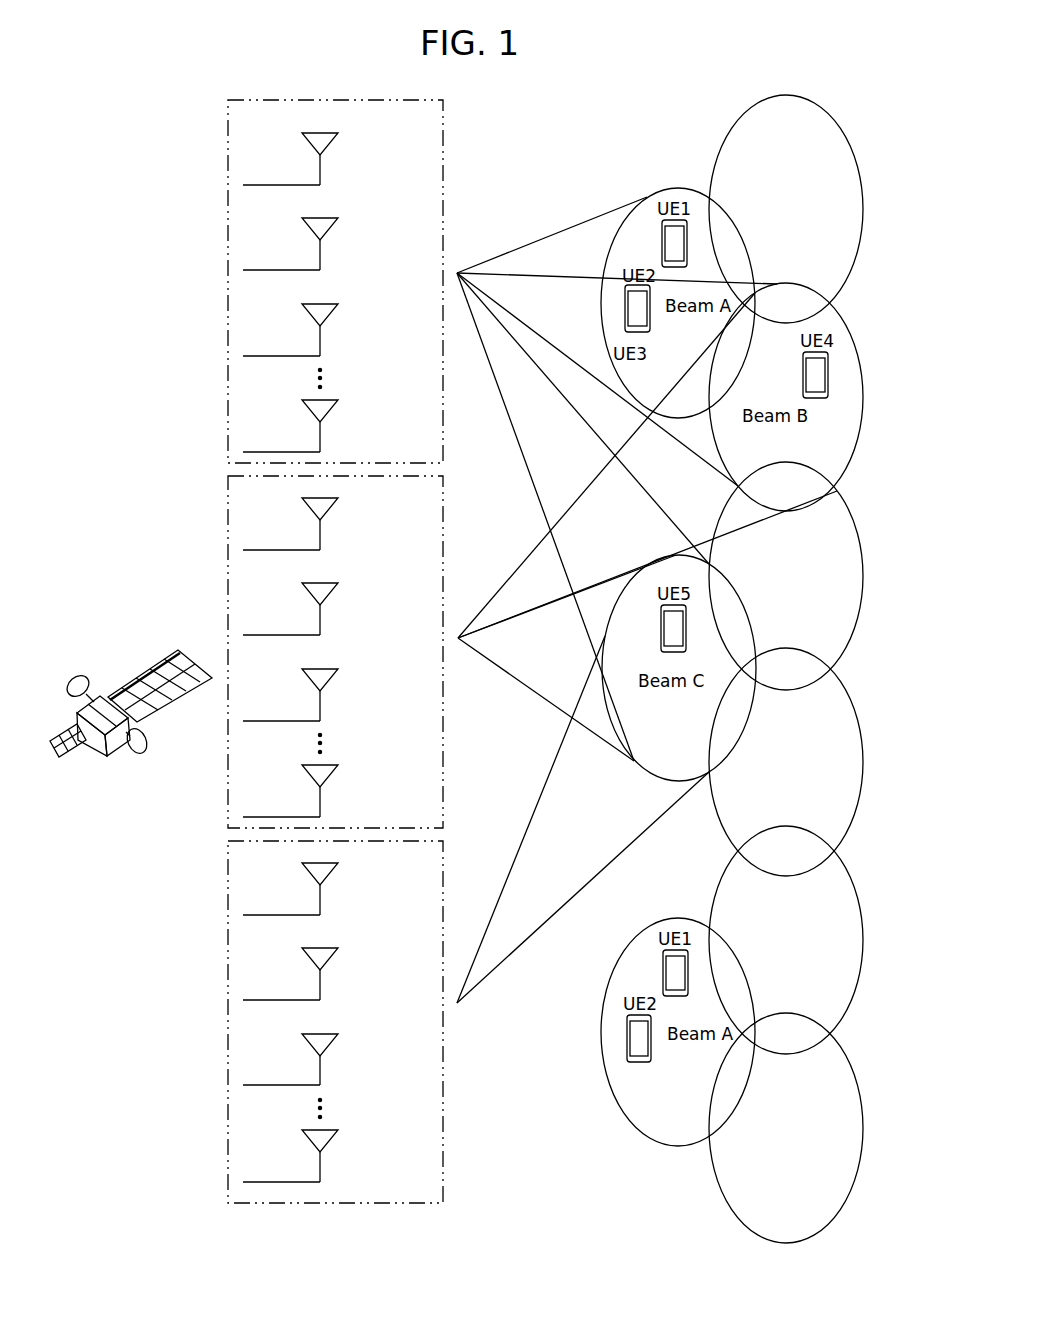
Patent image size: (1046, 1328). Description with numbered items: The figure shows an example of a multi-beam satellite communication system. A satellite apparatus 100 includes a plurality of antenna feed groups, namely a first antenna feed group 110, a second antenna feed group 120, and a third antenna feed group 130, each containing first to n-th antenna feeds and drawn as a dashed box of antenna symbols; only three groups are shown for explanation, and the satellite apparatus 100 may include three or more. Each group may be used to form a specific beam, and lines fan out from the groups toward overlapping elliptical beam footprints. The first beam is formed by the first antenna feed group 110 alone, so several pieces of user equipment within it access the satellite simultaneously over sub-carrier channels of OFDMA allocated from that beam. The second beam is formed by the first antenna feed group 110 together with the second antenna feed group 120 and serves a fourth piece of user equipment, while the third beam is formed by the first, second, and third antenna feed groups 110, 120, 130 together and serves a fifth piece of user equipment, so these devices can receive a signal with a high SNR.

The satellite apparatus 100 is at (98, 758).
The first antenna feed group 110 is at (228, 225).
The second antenna feed group 120 is at (228, 549).
The third antenna feed group 130 is at (228, 1086).